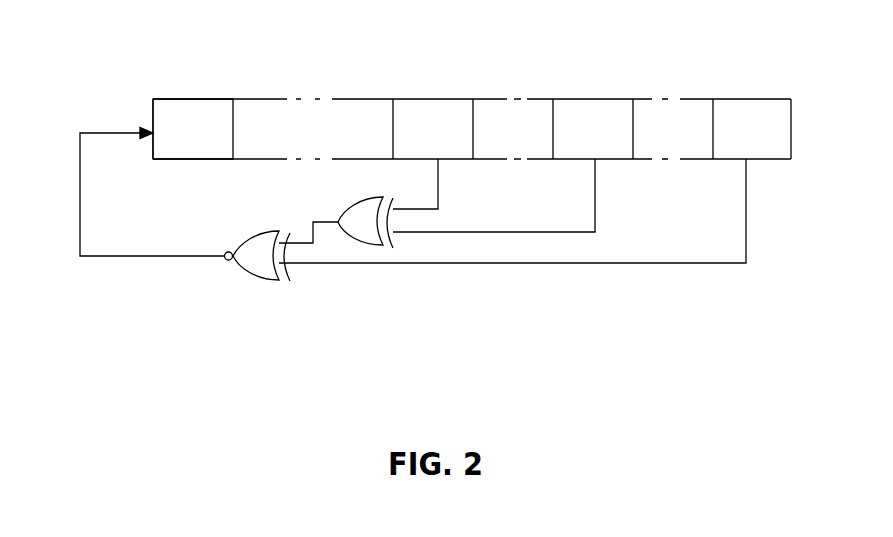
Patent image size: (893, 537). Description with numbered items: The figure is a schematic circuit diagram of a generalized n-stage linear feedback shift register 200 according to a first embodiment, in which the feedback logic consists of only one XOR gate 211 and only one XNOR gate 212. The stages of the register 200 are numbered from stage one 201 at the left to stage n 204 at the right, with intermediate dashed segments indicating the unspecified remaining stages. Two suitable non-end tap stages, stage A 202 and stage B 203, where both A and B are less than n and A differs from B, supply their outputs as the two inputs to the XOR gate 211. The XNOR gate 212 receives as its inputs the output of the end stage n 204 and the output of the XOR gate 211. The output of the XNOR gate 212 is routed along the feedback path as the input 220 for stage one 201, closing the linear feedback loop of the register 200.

The register 200 is at (153, 56).
The stage 1 201 is at (195, 97).
The stage A 202 is at (422, 97).
The stage B 203 is at (580, 95).
The stage n 204 is at (752, 95).
The XOR gate 211 is at (365, 238).
The XNOR gate 212 is at (253, 266).
The input for stage 1 220 is at (77, 252).